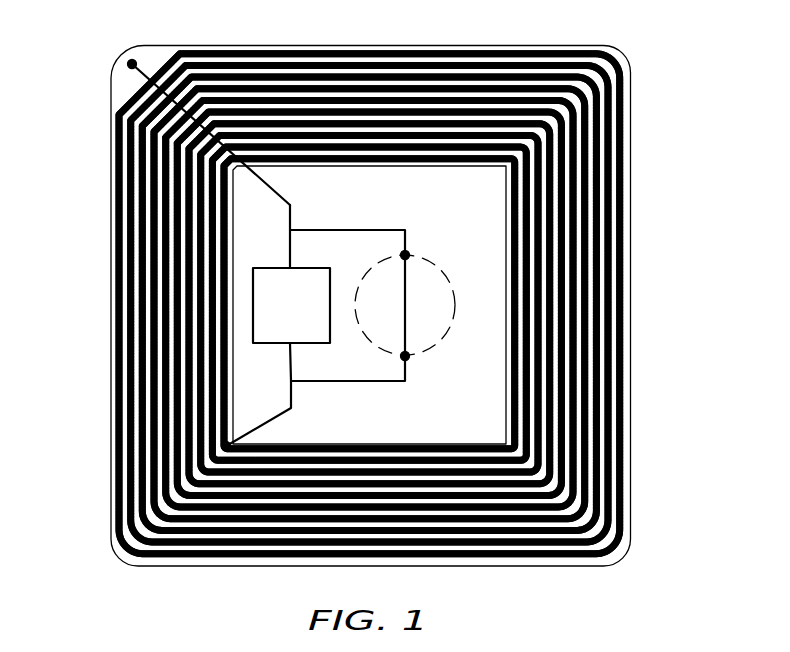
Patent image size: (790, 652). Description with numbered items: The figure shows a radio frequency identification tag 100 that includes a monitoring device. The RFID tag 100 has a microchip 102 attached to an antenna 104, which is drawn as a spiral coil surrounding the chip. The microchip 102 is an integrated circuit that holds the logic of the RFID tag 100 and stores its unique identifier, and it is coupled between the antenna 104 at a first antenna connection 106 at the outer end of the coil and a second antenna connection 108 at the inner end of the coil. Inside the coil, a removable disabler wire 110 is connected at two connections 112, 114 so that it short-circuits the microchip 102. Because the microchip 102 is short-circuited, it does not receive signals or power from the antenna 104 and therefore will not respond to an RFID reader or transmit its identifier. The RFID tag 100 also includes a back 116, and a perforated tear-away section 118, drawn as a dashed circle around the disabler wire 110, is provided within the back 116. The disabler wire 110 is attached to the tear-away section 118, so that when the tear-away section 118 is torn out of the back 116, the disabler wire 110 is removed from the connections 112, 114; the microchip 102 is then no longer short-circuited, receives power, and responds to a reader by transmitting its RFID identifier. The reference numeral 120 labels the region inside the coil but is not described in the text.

The radio frequency identification (RFID) tag 100 is at (394, 305).
The microchip 102 is at (306, 312).
The antenna 104 is at (103, 336).
The first antenna connection 106 is at (121, 58).
The second antenna connection 108 is at (224, 430).
The removable disabler wire 110 is at (313, 215).
The connection 112 is at (400, 245).
The connection 114 is at (400, 350).
The back 116 is at (466, 328).
The tear-away section 118 is at (438, 270).
The inner area 120 is at (382, 421).